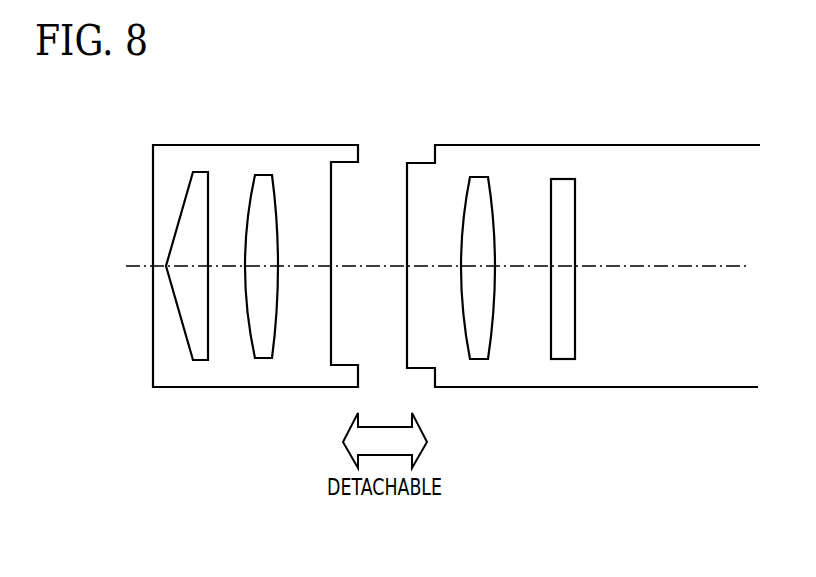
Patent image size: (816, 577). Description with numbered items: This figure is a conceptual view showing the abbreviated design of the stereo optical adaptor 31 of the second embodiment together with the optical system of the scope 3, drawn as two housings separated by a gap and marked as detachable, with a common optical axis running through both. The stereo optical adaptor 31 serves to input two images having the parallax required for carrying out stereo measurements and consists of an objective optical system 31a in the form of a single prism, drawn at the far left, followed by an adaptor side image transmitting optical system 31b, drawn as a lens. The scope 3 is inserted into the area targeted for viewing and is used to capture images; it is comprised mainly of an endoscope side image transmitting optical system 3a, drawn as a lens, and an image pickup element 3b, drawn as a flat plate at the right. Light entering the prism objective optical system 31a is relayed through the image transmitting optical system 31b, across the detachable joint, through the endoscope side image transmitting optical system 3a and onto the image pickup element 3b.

The stereo optical adaptor 31 is at (236, 145).
The objective optical system 31a is at (198, 362).
The adaptor side image transmitting optical system 31b is at (262, 358).
The scope 3 is at (572, 145).
The endoscope side image transmitting optical system 3a is at (477, 360).
The image pickup element 3b is at (565, 360).